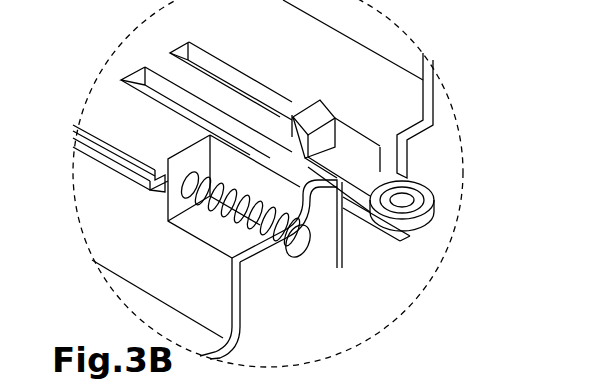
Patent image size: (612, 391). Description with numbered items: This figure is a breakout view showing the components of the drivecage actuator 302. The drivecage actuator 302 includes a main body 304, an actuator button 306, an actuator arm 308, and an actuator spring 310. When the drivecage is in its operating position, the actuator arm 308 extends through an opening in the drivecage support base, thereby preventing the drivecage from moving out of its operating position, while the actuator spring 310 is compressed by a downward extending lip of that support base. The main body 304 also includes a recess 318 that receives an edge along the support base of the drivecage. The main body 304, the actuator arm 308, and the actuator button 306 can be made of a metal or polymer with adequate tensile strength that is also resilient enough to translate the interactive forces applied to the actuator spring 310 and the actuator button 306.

The drivecage actuator 302 is at (480, 157).
The main body 304 is at (405, 110).
The actuator button 306 is at (407, 200).
The actuator arm 308 is at (325, 113).
The actuator spring 310 is at (288, 250).
The recess 318 is at (110, 160).